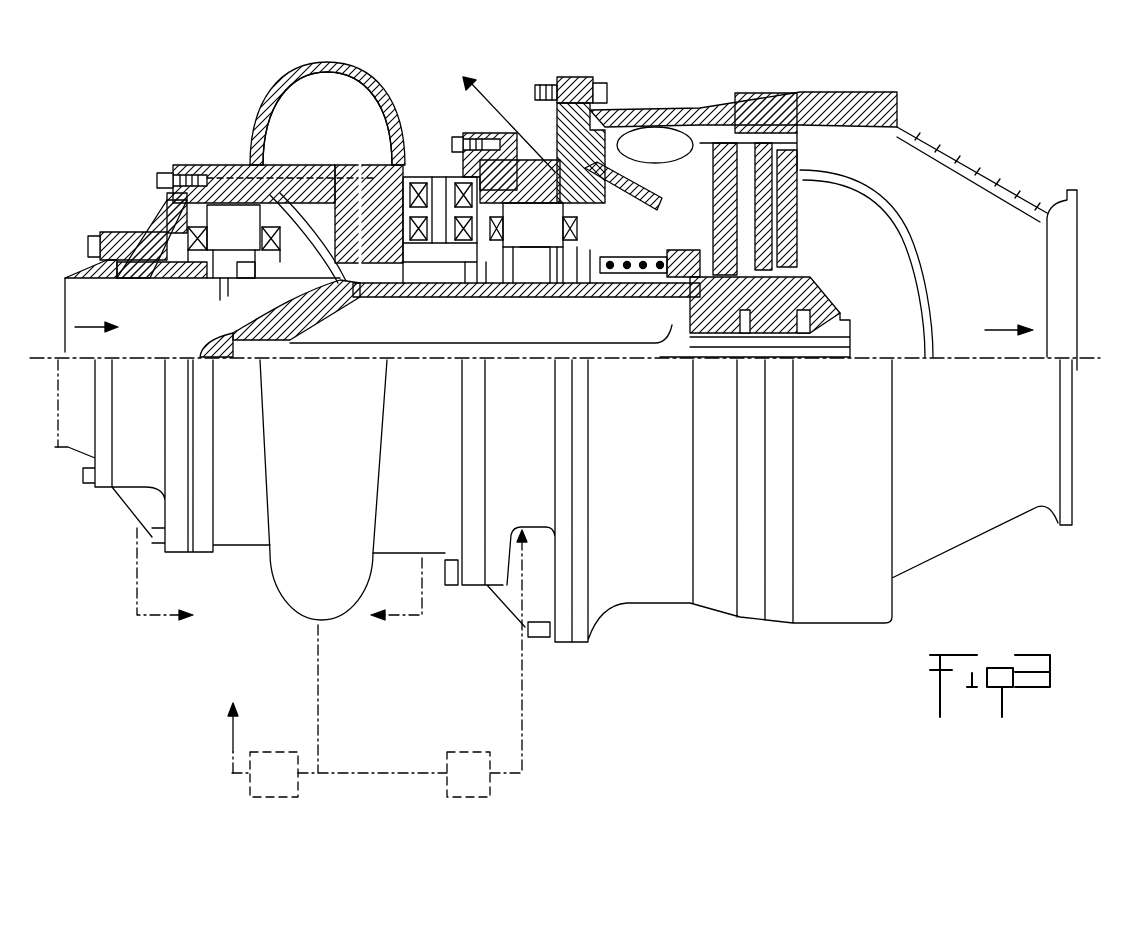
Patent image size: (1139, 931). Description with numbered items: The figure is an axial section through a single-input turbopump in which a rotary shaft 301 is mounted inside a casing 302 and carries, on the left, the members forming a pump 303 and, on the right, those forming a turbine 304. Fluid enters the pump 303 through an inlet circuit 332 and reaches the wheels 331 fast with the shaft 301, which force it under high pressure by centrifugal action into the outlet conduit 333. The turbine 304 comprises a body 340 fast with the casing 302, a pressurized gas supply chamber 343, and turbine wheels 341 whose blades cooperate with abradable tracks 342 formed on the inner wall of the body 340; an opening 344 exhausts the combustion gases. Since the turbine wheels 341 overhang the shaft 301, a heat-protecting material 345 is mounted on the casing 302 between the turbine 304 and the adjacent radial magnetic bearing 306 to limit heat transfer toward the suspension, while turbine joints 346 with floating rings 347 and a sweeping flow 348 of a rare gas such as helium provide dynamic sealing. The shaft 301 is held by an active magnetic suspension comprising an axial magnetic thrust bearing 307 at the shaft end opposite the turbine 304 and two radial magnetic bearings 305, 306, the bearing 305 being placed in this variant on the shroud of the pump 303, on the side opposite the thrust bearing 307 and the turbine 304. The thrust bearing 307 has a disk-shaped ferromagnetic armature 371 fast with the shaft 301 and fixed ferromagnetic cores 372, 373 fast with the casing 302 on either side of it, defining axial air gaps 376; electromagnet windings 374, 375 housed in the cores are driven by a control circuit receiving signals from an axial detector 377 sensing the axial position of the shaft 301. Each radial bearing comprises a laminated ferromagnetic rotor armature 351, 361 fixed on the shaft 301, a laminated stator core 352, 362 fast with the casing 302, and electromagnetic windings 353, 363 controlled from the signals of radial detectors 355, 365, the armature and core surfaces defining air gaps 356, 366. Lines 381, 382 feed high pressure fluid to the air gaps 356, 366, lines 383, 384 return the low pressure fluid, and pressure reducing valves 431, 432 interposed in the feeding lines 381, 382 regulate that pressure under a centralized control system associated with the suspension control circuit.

The rotary shaft 301 is at (845, 305).
The casing 302 is at (243, 557).
The pump 303 is at (296, 60).
The turbine 304 is at (738, 629).
The radial magnetic bearing 305 is at (222, 165).
The radial magnetic bearing 306 is at (535, 170).
The axial magnetic thrust bearing 307 is at (402, 324).
The wheels 331 is at (205, 352).
The inlet circuit 332 is at (327, 292).
The outlet conduit 333 is at (265, 127).
The body 340 is at (697, 108).
The turbine wheels 341 is at (783, 257).
The abradable tracks 342 is at (740, 95).
The pressurized gas supply chamber 343 is at (640, 173).
The opening 344 is at (1010, 203).
The heat-protecting material 345 is at (620, 125).
The turbine joints 346 is at (663, 218).
The floating rings 347 is at (611, 273).
The sweeping flow 348 is at (466, 70).
The rotor armature 351 is at (220, 303).
The stator core 352 is at (264, 222).
The electromagnetic windings 353 is at (214, 280).
The radial detector 355 is at (150, 230).
The air gap 356 is at (237, 268).
The rotor armature 361 is at (538, 265).
The stator core 362 is at (566, 219).
The electromagnetic windings 363 is at (491, 280).
The radial detector 365 is at (597, 265).
The air gap 366 is at (541, 265).
The ferromagnetic armature 371 is at (438, 283).
The fixed ferromagnetic core 372 is at (407, 245).
The fixed ferromagnetic core 373 is at (475, 262).
The electromagnet winding 374 is at (425, 165).
The electromagnet winding 375 is at (470, 150).
The axial air gaps 376 is at (433, 180).
The axial detector 377 is at (357, 265).
The feeding line 381 is at (232, 737).
The feeding line 382 is at (380, 772).
The return line 383 is at (172, 618).
The return line 384 is at (397, 618).
The pressure reducing valve 431 is at (273, 757).
The pressure reducing valve 432 is at (471, 757).